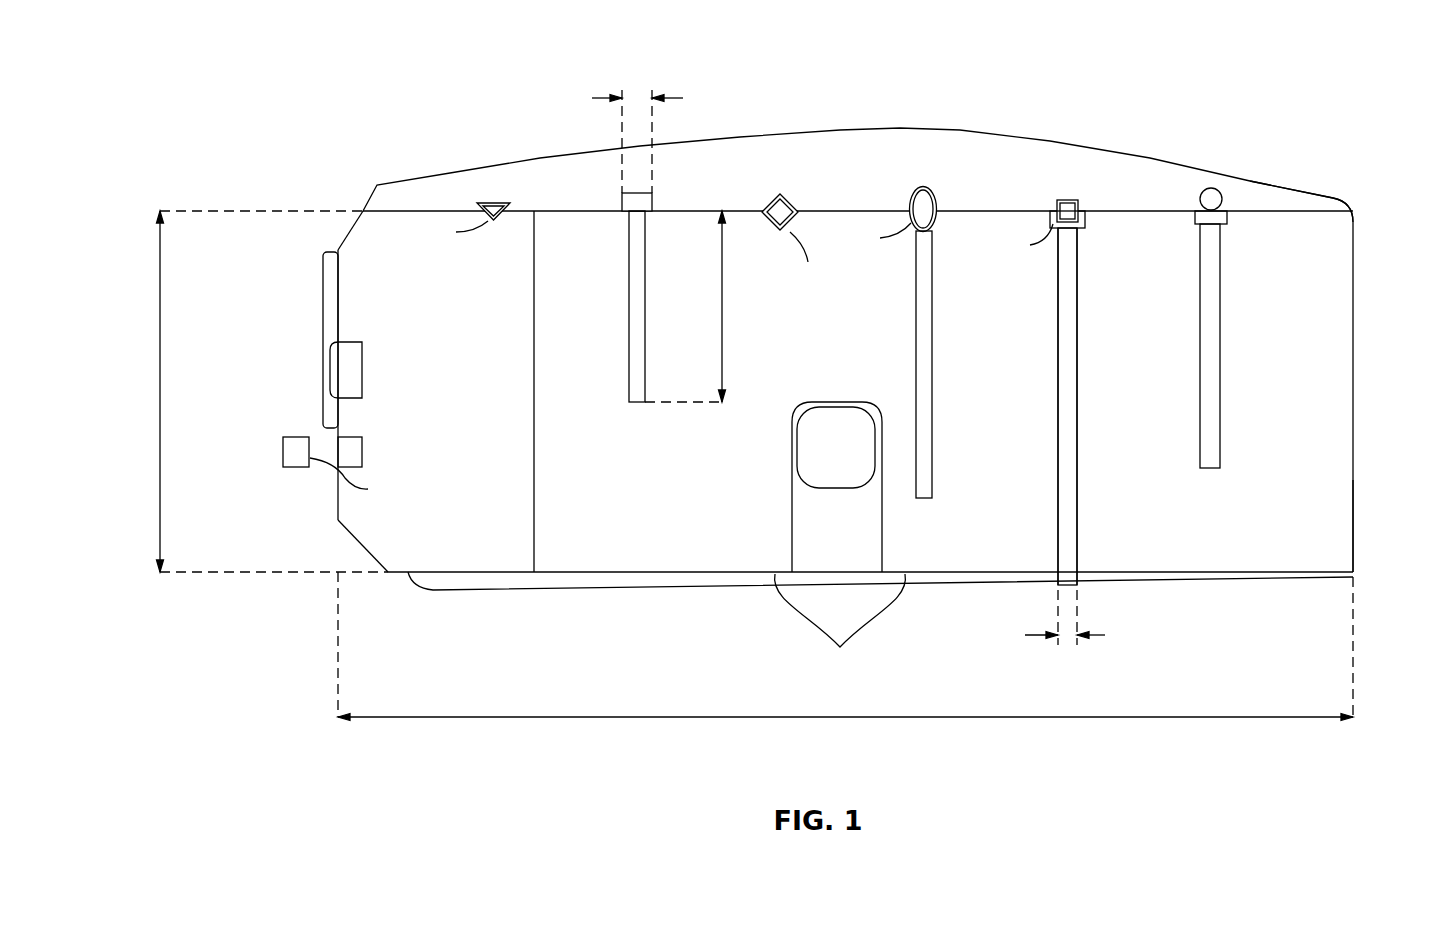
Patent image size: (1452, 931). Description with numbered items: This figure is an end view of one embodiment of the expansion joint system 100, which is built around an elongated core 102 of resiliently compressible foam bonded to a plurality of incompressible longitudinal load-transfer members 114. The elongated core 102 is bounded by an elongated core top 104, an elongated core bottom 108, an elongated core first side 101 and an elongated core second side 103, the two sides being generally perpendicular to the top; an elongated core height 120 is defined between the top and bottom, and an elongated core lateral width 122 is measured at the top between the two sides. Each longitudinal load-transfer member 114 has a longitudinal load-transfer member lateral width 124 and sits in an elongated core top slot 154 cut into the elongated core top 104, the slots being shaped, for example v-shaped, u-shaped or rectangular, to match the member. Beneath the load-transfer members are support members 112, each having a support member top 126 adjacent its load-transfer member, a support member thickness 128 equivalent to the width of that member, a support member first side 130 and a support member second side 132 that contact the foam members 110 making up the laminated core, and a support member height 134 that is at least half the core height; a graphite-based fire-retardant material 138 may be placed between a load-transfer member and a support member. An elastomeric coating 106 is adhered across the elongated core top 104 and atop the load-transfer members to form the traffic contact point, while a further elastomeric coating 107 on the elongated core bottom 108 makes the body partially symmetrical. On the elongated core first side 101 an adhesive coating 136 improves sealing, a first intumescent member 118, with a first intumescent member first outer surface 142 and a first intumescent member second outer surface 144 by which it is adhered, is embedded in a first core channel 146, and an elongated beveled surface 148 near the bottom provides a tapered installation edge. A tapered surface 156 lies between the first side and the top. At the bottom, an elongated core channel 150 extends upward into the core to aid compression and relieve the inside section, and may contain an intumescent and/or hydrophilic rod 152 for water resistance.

The expansion joint system 100 is at (276, 63).
The elongated core first side 101 is at (336, 484).
The elongated core 102 is at (1340, 277).
The elongated core second side 103 is at (1355, 528).
The elongated core top 104 is at (1298, 207).
The elastomeric coating 106 is at (866, 152).
The elastomeric coating 107 is at (840, 632).
The elongated core bottom 108 is at (1315, 575).
The foam members 110 is at (468, 563).
The support member 112 is at (645, 283).
The longitudinal load-transfer member 114 is at (494, 204).
The first intumescent member 118 is at (338, 357).
The elongated core height 120 is at (162, 388).
The elongated core lateral width 122 is at (850, 720).
The longitudinal load-transfer member lateral width 124 is at (655, 98).
The support member top 126 is at (1080, 227).
The support member thickness 128 is at (1050, 637).
The support member first side 130 is at (1057, 481).
The support member second side 132 is at (1078, 471).
The support member height 134 is at (724, 331).
The adhesive coating 136 is at (331, 283).
The graphite-based fire-retardant material 138 is at (1228, 221).
The first intumescent member first outer surface 142 is at (283, 452).
The first intumescent member second outer surface 144 is at (366, 483).
The first core channel 146 is at (362, 446).
The elongated beveled surface 148 is at (357, 540).
The elongated core channel 150 is at (815, 521).
The intumescent and/or hydrophilic rod 152 is at (835, 418).
The elongated core top slot 154 is at (728, 257).
The tapered surface 156 is at (350, 228).